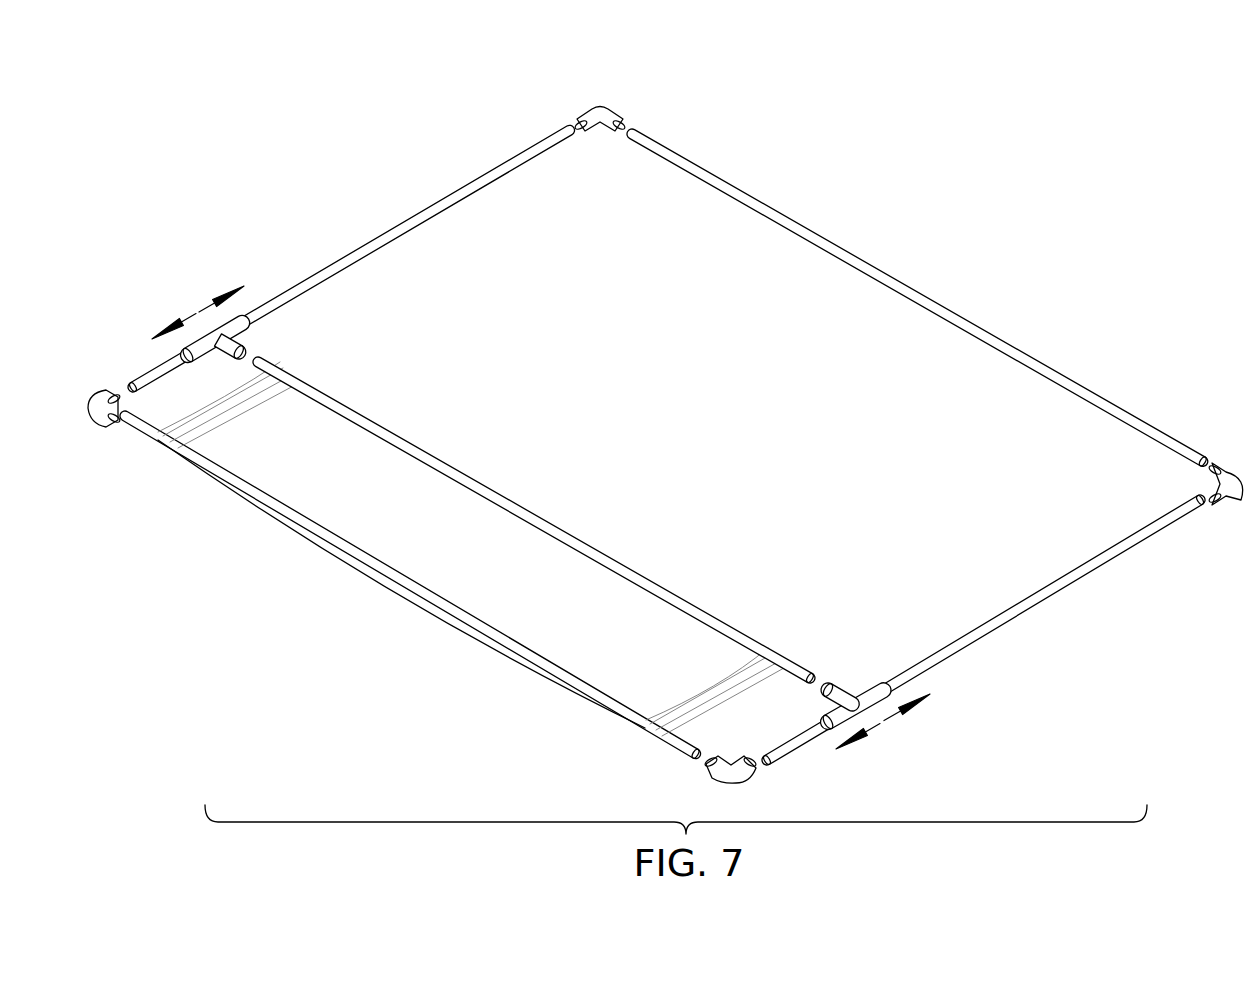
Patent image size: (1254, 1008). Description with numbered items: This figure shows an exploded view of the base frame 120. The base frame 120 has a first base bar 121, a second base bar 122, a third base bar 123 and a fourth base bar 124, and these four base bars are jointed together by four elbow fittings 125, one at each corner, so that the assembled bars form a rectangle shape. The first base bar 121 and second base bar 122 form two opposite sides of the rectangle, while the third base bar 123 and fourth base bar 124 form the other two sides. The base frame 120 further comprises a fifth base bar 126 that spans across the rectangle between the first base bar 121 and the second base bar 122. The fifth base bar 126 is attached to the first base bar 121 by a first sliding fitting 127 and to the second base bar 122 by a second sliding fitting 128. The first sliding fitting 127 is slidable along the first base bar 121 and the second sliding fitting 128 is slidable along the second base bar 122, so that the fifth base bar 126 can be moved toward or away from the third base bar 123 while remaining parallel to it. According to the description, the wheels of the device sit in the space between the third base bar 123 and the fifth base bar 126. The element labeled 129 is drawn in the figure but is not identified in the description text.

The base frame 120 is at (1028, 700).
The first base bar 121 is at (432, 222).
The second base bar 122 is at (1063, 587).
The third base bar 123 is at (335, 538).
The fourth base bar 124 is at (910, 282).
The elbow fitting 125 is at (598, 108).
The fifth base bar 126 is at (472, 482).
The first sliding fitting 127 is at (240, 328).
The second sliding fitting 128 is at (852, 704).
The fabric sheet 129 is at (640, 728).